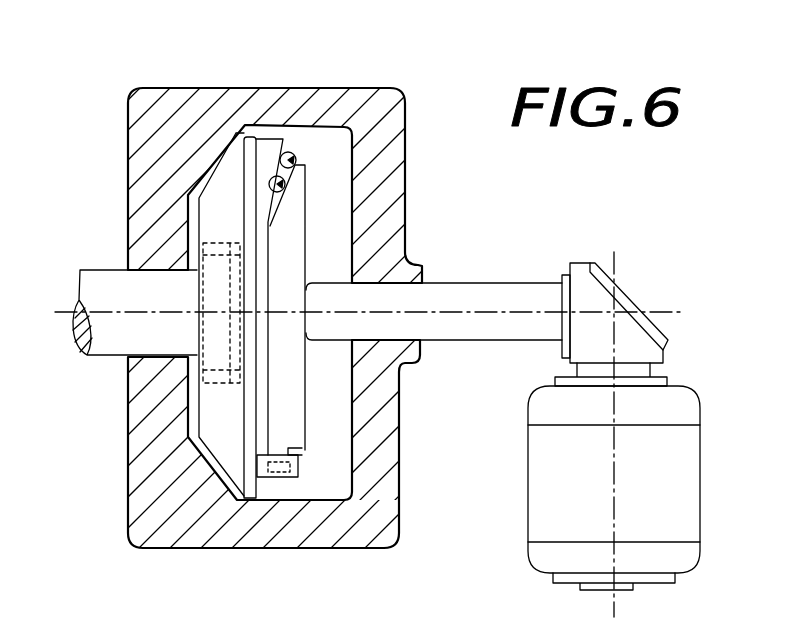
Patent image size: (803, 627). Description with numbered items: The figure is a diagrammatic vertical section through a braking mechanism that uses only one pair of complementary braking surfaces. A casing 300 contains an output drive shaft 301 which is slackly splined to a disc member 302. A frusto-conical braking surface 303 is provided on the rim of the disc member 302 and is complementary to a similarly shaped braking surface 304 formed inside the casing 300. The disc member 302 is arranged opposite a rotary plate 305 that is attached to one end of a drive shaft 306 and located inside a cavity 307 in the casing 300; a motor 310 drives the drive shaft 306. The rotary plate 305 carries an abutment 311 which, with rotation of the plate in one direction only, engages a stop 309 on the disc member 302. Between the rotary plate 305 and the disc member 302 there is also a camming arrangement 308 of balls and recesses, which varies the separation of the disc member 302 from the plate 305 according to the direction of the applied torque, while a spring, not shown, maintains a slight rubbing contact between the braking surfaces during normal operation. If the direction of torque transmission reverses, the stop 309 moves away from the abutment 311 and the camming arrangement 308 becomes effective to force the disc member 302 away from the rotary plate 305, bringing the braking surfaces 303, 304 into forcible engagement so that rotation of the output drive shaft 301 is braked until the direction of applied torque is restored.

The casing 300 is at (377, 468).
The output drive shaft 301 is at (110, 345).
The disc member 302 is at (217, 442).
The frusto-conical braking surface 303 is at (203, 177).
The braking surface 304 is at (218, 152).
The rotary plate 305 is at (290, 409).
The drive shaft 306 is at (433, 298).
The cavity 307 is at (337, 217).
The camming arrangement 308 is at (293, 152).
The stop 309 is at (283, 480).
The motor 310 is at (558, 505).
The abutment 311 is at (300, 452).